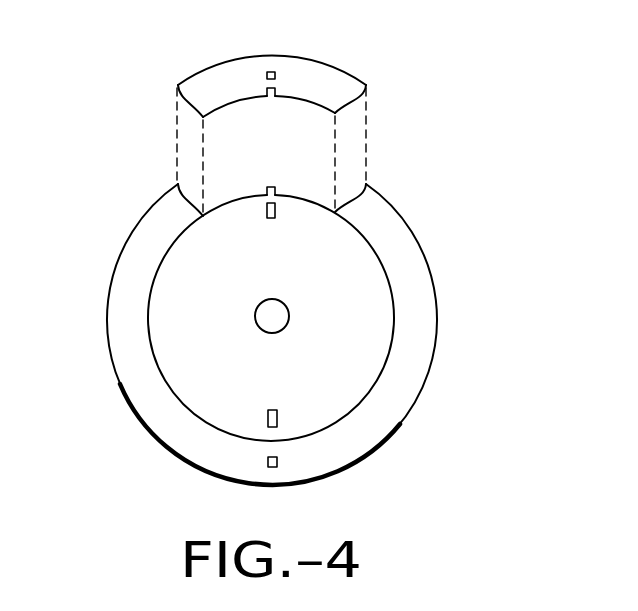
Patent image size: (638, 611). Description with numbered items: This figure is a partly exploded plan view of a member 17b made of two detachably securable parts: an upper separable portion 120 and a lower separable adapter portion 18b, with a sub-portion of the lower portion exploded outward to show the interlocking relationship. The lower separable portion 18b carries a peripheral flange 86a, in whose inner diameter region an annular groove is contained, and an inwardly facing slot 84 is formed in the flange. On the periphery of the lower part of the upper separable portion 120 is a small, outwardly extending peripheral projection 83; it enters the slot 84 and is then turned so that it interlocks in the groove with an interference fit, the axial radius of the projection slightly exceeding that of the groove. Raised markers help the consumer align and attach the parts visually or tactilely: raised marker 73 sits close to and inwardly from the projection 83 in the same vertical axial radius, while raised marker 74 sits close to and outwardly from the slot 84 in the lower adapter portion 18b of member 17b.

The peripheral flange 86a is at (222, 85).
The raised marker 74 is at (277, 75).
The slot 84 is at (274, 100).
The peripheral projection 83 is at (266, 190).
The raised marker 73 is at (267, 212).
The upper separable portion 120 is at (192, 343).
The lower separable portion 18b is at (410, 275).
The member 17b is at (398, 431).